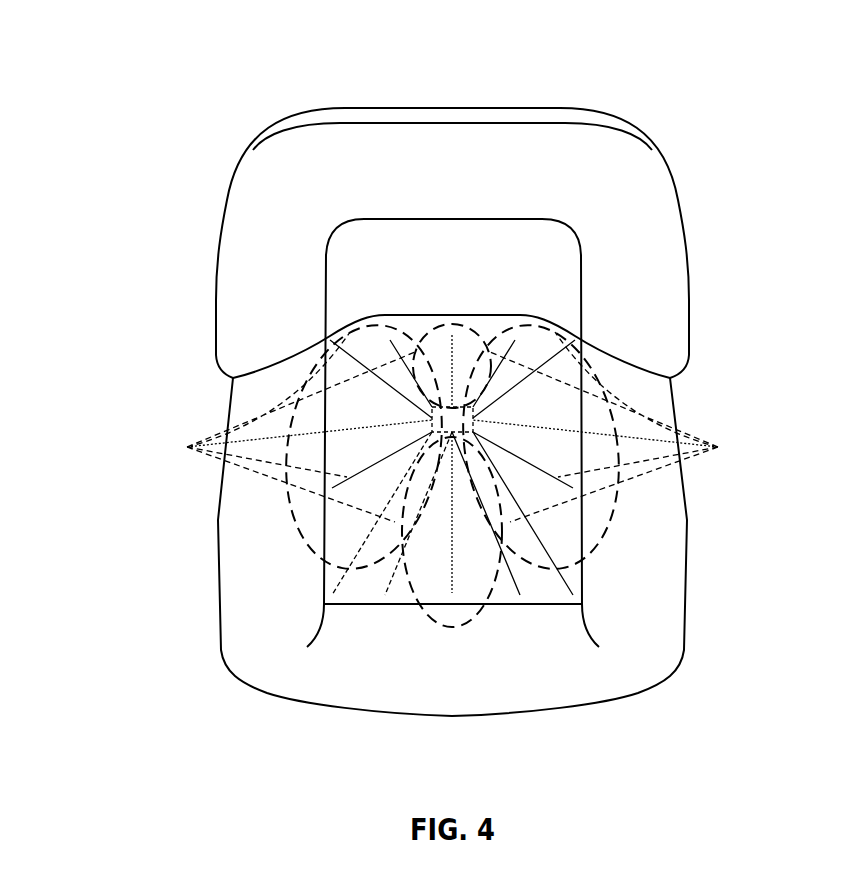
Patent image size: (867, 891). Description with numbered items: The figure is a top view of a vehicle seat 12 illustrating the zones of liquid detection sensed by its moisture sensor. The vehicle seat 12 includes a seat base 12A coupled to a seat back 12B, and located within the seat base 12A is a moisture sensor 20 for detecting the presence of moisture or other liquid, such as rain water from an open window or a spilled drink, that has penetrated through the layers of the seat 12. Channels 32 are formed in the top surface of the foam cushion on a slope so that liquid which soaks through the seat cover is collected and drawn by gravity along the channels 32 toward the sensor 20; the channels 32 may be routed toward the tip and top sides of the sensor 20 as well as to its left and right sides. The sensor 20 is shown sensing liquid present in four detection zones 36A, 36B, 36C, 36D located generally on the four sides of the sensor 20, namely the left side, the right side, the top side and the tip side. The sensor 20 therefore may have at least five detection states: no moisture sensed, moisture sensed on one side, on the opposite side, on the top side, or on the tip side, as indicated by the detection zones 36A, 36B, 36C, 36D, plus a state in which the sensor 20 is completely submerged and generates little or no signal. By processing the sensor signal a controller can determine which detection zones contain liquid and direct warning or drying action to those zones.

The vehicle seat 12 is at (367, 412).
The seat base 12A is at (218, 597).
The seat back 12B is at (215, 296).
The moisture sensor 20 is at (473, 407).
The channels 32 is at (185, 447).
The detection zone 36A is at (462, 325).
The detection zone 36B is at (410, 585).
The detection zone 36C is at (285, 518).
The detection zone 36D is at (620, 518).